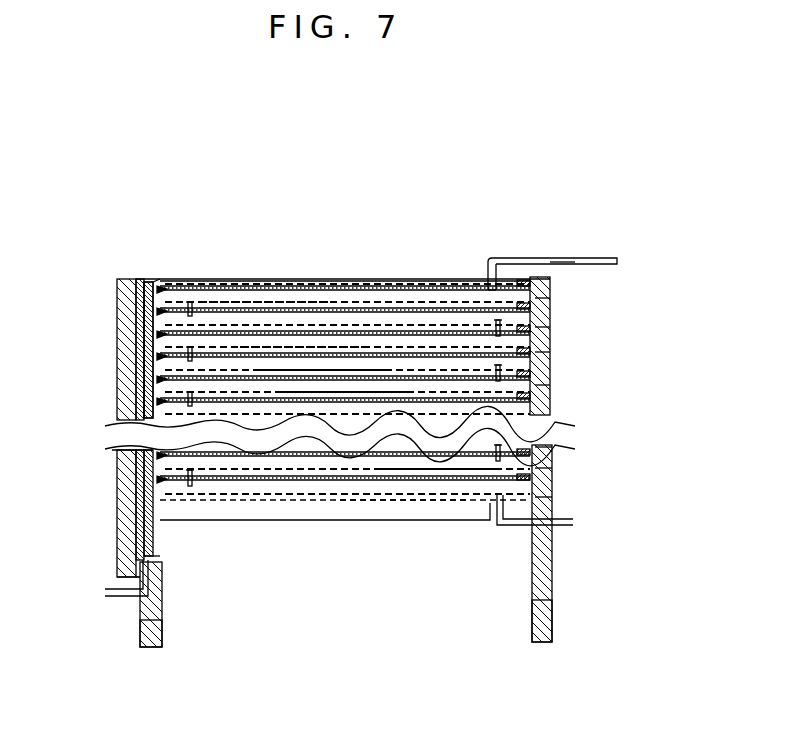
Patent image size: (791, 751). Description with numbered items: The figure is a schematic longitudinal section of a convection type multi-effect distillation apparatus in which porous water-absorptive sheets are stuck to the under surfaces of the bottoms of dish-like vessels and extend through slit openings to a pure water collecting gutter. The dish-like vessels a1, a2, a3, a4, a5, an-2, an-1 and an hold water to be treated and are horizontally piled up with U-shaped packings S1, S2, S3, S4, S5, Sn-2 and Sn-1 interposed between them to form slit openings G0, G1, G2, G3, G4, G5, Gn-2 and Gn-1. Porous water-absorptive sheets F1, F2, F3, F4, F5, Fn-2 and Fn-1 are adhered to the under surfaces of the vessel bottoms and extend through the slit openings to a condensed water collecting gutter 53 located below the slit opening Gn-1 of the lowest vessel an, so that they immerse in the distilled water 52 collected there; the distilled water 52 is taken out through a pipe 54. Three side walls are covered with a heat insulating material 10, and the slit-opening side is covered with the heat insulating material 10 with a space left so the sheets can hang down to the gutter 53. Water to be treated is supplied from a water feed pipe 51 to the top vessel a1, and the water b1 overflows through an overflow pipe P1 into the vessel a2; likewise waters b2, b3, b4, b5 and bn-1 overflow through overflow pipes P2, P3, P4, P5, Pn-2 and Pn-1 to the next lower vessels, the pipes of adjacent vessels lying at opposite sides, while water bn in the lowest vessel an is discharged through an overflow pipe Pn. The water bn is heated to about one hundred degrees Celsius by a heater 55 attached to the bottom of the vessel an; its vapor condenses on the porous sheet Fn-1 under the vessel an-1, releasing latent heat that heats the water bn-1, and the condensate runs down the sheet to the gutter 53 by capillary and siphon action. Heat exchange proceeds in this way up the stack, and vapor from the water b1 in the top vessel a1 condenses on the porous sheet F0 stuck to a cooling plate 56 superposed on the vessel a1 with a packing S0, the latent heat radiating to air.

The heat insulating material 10 is at (341, 651).
The water feed pipe 51 is at (556, 226).
The distilled water 52 is at (89, 602).
The condensed water collecting gutter 53 is at (85, 594).
The pipe 54 is at (96, 616).
The heater 55 is at (325, 553).
The cooling plate 56 is at (487, 239).
The porous water-absorptive sheet F0 is at (138, 303).
The porous water-absorptive sheet F1 is at (280, 264).
The porous water-absorptive sheet F2 is at (280, 301).
The porous water-absorptive sheet F3 is at (280, 349).
The porous water-absorptive sheet F4 is at (280, 386).
The porous water-absorptive sheet F5 is at (280, 424).
The porous water-absorptive sheet Fn-2 is at (280, 487).
The porous water-absorptive sheet Fn-1 is at (280, 524).
The slit opening G0 is at (280, 248).
The slit opening G1 is at (280, 282).
The slit opening G2 is at (280, 327).
The slit opening G3 is at (280, 370).
The slit opening G4 is at (280, 407).
The slit opening G5 is at (280, 445).
The slit opening Gn-2 is at (280, 508).
The slit opening Gn-1 is at (280, 546).
The overflow pipe P1 is at (195, 252).
The overflow pipe P2 is at (474, 262).
The overflow pipe P3 is at (214, 274).
The overflow pipe P4 is at (461, 284).
The overflow pipe P5 is at (231, 297).
The overflow pipe Pn-2 is at (472, 524).
The overflow pipe Pn-1 is at (208, 537).
The overflow pipe Pn is at (529, 549).
The water b1 is at (265, 245).
The water b2 is at (285, 256).
The water b3 is at (305, 267).
The water b4 is at (325, 279).
The water b5 is at (346, 290).
The water bn-1 is at (440, 536).
The water bn is at (405, 551).
The packing S0 is at (528, 237).
The U-shaped packing S1 is at (582, 283).
The U-shaped packing S2 is at (582, 322).
The U-shaped packing S3 is at (582, 360).
The U-shaped packing S4 is at (582, 399).
The U-shaped packing S5 is at (582, 437).
The U-shaped packing Sn-2 is at (588, 494).
The U-shaped packing Sn-1 is at (588, 536).
The dish-like vessel a1 is at (599, 246).
The dish-like vessel a2 is at (591, 298).
The dish-like vessel a3 is at (591, 343).
The dish-like vessel a4 is at (591, 379).
The dish-like vessel a5 is at (591, 421).
The dish-like vessel an-2 is at (597, 479).
The dish-like vessel an-1 is at (597, 521).
The dish-like vessel an is at (591, 563).